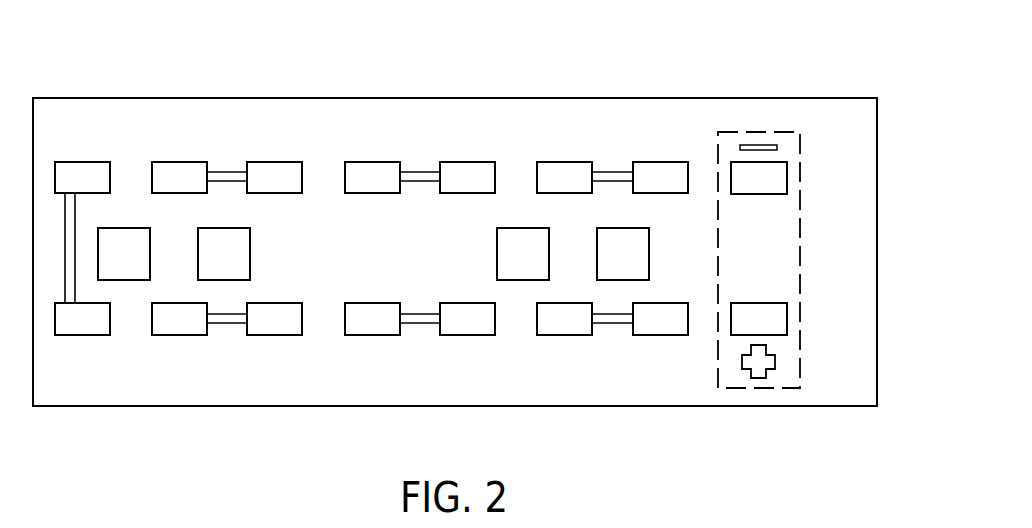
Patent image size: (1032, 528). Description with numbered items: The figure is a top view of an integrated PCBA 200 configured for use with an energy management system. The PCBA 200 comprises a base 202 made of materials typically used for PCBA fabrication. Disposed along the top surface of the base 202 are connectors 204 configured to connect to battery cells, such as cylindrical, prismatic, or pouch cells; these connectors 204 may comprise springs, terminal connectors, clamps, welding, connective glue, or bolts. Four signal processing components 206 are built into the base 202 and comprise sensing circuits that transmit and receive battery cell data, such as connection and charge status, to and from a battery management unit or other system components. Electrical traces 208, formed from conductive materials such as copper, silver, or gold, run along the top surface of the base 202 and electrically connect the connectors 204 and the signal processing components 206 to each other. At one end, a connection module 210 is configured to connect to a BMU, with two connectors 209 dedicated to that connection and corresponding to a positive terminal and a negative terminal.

The PCBA 200 is at (830, 40).
The base 202 is at (402, 137).
The connectors 204 is at (177, 335).
The signal processing components 206 is at (497, 253).
The electrical traces 208 is at (612, 172).
The connectors dedicated for connection to a BMU 209 is at (787, 176).
The connection modules 210 is at (758, 388).